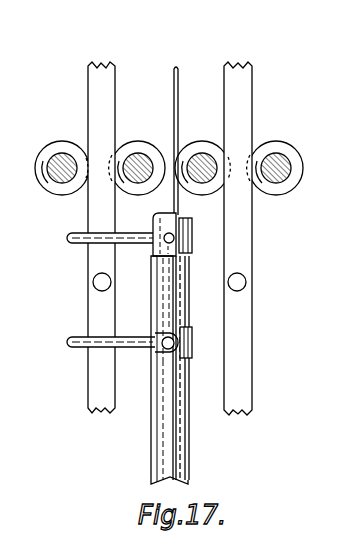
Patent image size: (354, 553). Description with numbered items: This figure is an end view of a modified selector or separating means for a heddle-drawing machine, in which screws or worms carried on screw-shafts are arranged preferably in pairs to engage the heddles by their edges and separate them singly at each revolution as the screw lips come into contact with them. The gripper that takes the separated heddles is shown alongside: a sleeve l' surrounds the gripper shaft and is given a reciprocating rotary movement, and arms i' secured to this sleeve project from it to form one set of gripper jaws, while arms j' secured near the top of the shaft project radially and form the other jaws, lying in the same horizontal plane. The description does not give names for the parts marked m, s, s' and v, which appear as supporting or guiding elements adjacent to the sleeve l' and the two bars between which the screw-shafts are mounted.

The left guide bar s' is at (100, 237).
The guide bar / rod s is at (221, 271).
The holes v is at (93, 282).
The sleeve m is at (156, 219).
The arm i' is at (151, 313).
The arm j' is at (184, 342).
The sleeve l' is at (153, 422).